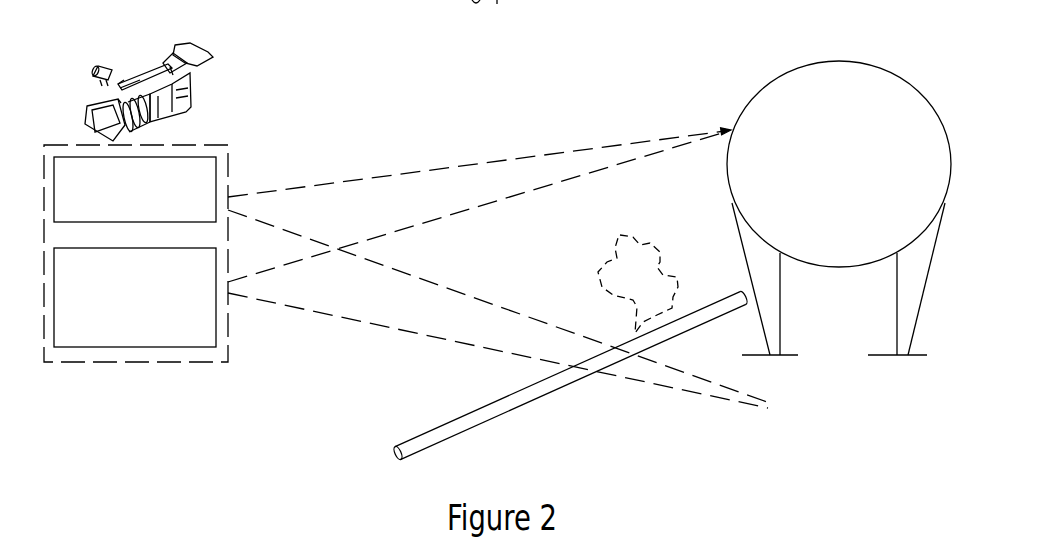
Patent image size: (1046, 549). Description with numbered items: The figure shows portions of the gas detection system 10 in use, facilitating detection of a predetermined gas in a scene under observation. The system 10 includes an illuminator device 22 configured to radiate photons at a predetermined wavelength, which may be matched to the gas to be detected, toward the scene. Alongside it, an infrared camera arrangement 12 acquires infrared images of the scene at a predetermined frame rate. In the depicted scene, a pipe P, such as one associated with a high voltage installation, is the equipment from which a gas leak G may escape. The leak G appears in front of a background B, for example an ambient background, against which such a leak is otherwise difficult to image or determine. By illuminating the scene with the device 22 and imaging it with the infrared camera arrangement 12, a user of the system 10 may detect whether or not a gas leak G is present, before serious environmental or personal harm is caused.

The system 10 is at (75, 47).
The illuminator device 22 is at (206, 172).
The infrared camera arrangement 12 is at (207, 329).
The background B is at (885, 92).
The gas leak G is at (644, 252).
The pipe P is at (502, 412).